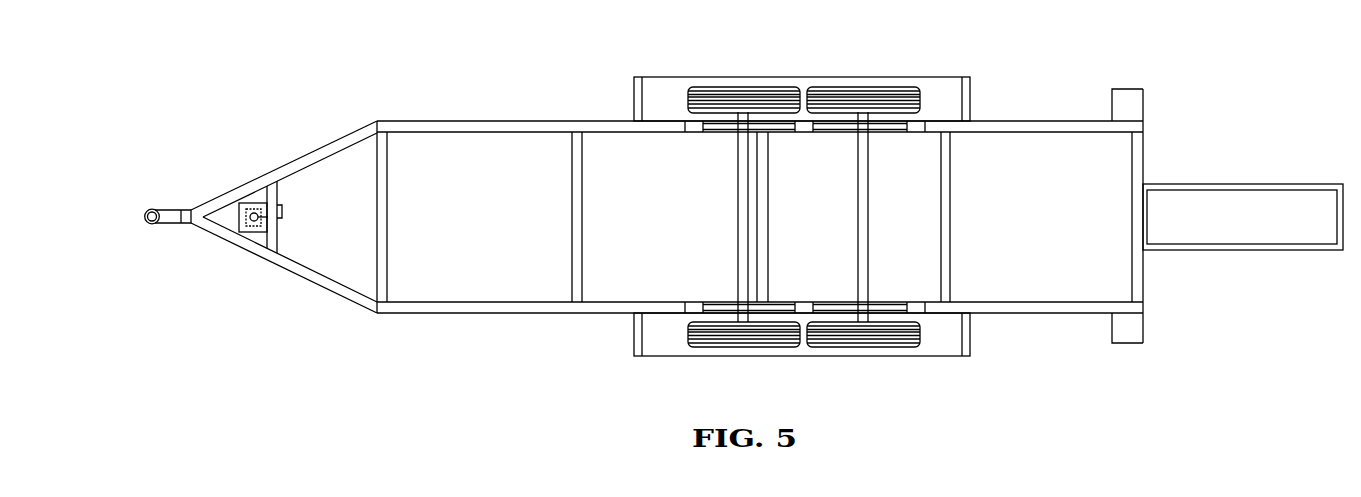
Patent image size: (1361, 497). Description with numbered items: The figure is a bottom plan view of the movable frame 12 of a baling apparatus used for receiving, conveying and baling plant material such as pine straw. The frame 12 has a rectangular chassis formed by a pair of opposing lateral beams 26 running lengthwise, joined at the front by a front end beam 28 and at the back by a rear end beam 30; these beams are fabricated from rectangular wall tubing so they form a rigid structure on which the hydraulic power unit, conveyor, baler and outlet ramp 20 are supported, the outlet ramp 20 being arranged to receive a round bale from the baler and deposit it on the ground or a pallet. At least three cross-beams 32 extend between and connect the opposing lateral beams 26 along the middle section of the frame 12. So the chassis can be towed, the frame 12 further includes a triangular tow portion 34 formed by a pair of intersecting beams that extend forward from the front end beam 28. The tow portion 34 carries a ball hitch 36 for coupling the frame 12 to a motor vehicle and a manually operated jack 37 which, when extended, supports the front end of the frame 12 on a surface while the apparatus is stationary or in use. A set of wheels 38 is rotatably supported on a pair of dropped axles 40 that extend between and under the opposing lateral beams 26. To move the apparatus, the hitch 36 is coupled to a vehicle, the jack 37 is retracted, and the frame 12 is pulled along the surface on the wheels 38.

The movable frame 12 is at (1029, 60).
The outlet ramp 20 is at (1260, 231).
The opposing lateral beams 26 is at (1072, 127).
The front end beam 28 is at (384, 217).
The rear end beam 30 is at (1143, 152).
The cross-beams 32 is at (582, 217).
The triangular tow portion 34 is at (297, 274).
The ball hitch 36 is at (151, 208).
The manually operated jack 37 is at (253, 203).
The wheels 38 is at (747, 88).
The axle cross members 40 is at (738, 217).